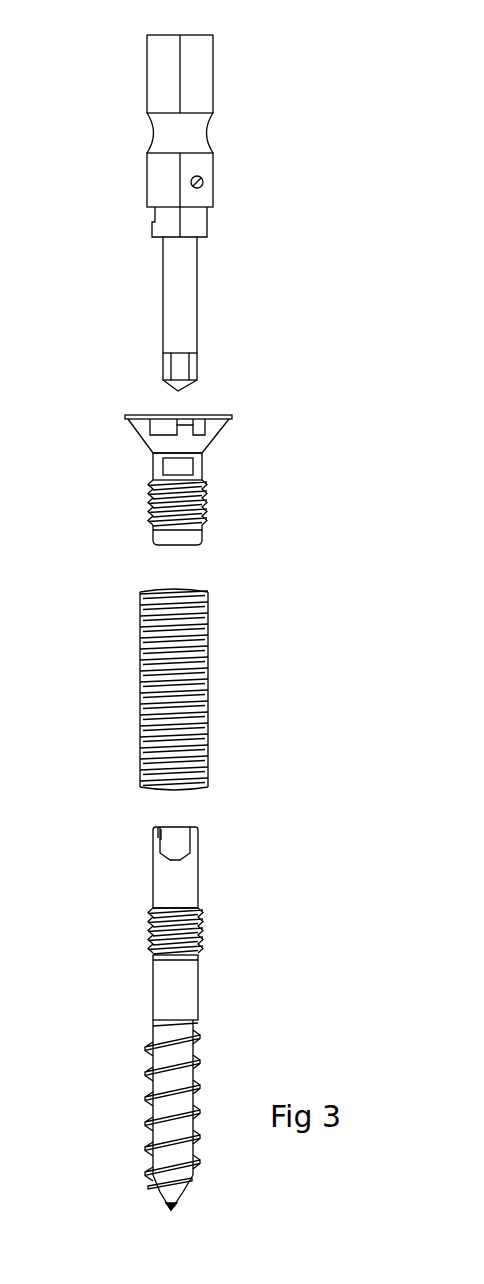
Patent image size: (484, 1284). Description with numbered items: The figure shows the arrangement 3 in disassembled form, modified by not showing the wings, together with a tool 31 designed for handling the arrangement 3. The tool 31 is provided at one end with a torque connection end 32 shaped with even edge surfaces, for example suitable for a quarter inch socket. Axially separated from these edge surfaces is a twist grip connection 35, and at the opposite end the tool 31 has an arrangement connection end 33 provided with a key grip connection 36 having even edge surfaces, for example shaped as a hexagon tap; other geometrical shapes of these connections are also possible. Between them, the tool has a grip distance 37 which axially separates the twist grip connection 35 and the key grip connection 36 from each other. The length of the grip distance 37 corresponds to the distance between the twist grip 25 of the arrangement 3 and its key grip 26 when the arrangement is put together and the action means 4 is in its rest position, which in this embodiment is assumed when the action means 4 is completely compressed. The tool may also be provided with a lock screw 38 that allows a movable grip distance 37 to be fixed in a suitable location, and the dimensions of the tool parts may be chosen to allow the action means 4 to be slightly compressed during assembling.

The arrangement 3 is at (225, 455).
The action means 4 is at (230, 648).
The twist grip 25 is at (197, 427).
The key grip 26 is at (177, 838).
The tool 31 is at (199, 201).
The torque connection end 32 is at (198, 72).
The arrangement connection end 33 is at (190, 314).
The twist grip connection 35 is at (158, 222).
The key grip connection 36 is at (162, 365).
The grip distance 37 is at (168, 298).
The lock screw 38 is at (205, 183).